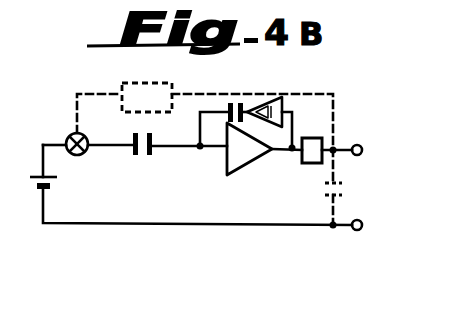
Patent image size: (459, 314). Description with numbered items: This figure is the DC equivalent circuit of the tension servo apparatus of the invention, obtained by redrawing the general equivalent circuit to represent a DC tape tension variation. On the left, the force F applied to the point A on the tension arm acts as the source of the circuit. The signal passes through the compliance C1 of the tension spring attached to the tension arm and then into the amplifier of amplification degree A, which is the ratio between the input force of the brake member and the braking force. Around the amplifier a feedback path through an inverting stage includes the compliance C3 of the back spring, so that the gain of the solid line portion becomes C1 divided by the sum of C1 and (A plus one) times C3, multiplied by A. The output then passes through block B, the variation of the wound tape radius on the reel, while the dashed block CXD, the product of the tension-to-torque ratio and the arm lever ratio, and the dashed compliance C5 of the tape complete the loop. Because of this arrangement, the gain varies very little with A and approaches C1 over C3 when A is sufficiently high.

The force applied to the point A F is at (40, 190).
The compliance of the tension spring C1 is at (147, 156).
The compliance of the back spring C3 is at (240, 103).
The compliance of the tape C5 is at (343, 183).
The amplification degree A is at (249, 149).
The variation of radius of the tape wound on the reel B is at (312, 150).
The product of tape tension ratio and lever ratio CXD is at (147, 97).